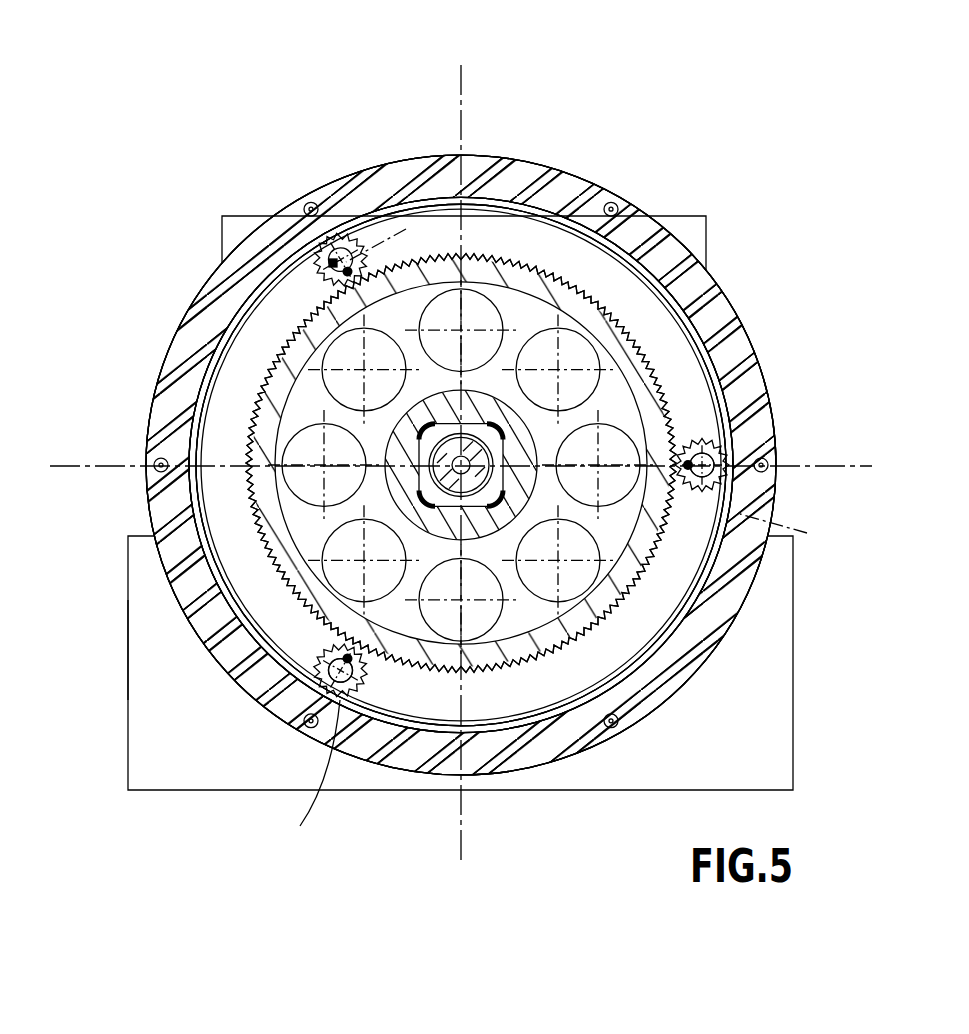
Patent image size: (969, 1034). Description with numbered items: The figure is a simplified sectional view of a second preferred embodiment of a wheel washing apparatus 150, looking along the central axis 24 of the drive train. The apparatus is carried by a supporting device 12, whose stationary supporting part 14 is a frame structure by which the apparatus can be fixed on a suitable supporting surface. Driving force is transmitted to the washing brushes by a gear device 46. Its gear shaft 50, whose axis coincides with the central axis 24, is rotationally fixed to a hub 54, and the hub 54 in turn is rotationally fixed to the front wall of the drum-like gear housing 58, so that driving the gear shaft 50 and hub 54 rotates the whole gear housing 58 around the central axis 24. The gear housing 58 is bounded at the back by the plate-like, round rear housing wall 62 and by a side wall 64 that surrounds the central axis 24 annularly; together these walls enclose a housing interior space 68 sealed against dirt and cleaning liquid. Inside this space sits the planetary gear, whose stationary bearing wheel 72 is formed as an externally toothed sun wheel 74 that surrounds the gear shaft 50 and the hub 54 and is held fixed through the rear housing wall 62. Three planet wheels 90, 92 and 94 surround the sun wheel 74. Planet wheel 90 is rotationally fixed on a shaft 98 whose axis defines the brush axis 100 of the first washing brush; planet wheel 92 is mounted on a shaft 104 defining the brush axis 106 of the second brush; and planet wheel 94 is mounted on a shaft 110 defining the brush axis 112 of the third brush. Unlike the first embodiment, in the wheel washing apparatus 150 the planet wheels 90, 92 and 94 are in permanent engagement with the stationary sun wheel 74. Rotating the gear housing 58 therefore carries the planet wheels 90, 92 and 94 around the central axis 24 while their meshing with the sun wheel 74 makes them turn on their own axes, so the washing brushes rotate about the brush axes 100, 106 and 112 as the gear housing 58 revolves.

The wheel washing apparatus 150 is at (568, 93).
The gear device 46 is at (630, 174).
The gear housing 58 is at (750, 276).
The rear housing wall 62 is at (690, 356).
The side wall 64 is at (755, 398).
The shaft 104 is at (705, 456).
The planet wheel 92 is at (725, 478).
The brush axis 106 is at (791, 530).
The housing interior space 68 is at (690, 573).
The sun wheel 74 is at (624, 578).
The stationary bearing wheel 72 is at (517, 625).
The shaft 110 is at (356, 690).
The brush axis 112 is at (304, 769).
The planet wheel 94 is at (350, 697).
The stationary supporting part 14 is at (181, 770).
The supporting device 12 is at (118, 772).
The shaft 98 is at (330, 258).
The planet wheel 90 is at (350, 250).
The brush axis 100 is at (394, 238).
The hub 54 is at (472, 414).
The gear shaft 50 is at (498, 450).
The central axis 24 is at (478, 530).